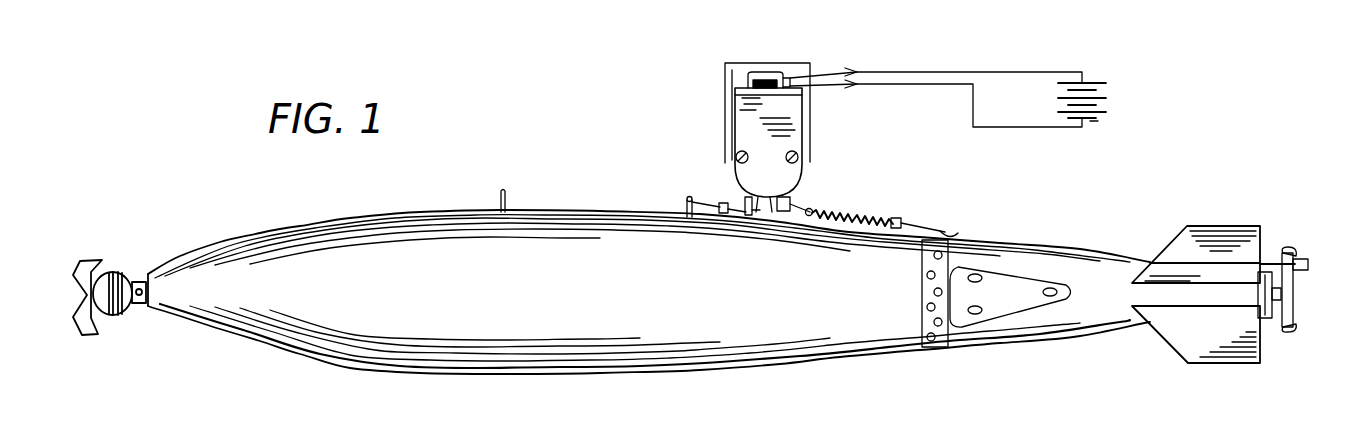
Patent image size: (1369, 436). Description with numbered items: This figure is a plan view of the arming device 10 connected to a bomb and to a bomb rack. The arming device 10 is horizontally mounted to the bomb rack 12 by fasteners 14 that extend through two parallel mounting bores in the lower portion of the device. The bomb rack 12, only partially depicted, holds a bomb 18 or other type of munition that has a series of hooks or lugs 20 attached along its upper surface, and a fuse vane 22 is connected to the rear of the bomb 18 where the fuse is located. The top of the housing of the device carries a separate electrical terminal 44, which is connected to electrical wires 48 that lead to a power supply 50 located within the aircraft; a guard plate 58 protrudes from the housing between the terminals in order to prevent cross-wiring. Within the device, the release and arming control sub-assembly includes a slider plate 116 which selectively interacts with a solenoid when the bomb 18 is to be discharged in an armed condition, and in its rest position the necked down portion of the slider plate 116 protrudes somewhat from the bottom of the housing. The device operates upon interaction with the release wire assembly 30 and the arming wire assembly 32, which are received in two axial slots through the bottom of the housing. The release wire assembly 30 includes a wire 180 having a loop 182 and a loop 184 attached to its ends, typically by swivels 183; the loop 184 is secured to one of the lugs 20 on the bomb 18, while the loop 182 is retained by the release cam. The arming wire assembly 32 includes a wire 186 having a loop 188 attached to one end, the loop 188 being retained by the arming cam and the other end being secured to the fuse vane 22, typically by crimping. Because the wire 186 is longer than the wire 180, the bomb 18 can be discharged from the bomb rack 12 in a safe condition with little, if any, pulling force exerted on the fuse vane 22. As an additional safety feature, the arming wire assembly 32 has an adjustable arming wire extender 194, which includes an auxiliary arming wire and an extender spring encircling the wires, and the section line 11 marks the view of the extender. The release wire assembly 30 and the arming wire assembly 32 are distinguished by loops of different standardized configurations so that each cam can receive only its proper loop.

The arming device 10 is at (771, 119).
The section line 11 is at (778, 214).
The bomb rack 12 is at (726, 80).
The fasteners 14 is at (735, 165).
The bomb 18 is at (400, 212).
The lugs 20 is at (506, 192).
The fuse vane 22 is at (1292, 252).
The release wire assembly 30 is at (698, 197).
The arming wire assembly 32 is at (906, 219).
The electrical terminal 44 is at (752, 72).
The electrical wires 48 is at (910, 84).
The power supply 50 is at (1102, 98).
The guard plate 58 is at (817, 96).
The slider plate 116 is at (792, 222).
The wire 180 is at (700, 222).
The loop 182 is at (762, 222).
The swivels 183 is at (745, 222).
The loop 184 is at (684, 202).
The wire 186 is at (956, 236).
The loop 188 is at (801, 207).
The adjustable arming wire extender 194 is at (879, 208).